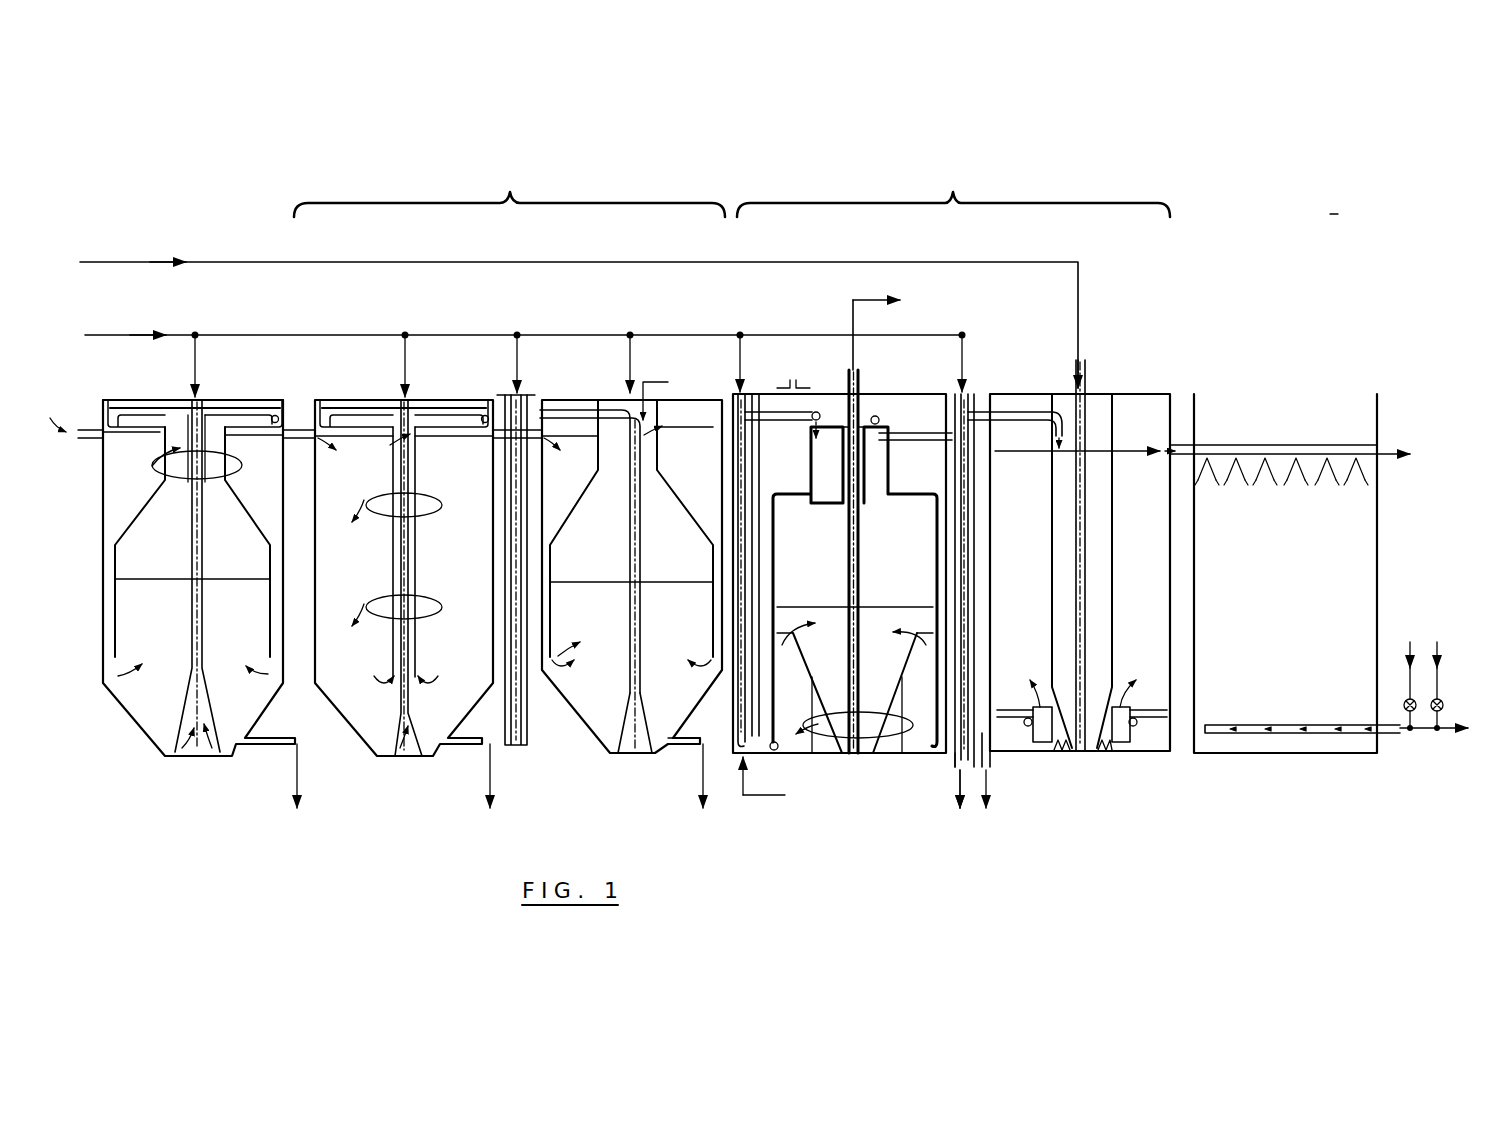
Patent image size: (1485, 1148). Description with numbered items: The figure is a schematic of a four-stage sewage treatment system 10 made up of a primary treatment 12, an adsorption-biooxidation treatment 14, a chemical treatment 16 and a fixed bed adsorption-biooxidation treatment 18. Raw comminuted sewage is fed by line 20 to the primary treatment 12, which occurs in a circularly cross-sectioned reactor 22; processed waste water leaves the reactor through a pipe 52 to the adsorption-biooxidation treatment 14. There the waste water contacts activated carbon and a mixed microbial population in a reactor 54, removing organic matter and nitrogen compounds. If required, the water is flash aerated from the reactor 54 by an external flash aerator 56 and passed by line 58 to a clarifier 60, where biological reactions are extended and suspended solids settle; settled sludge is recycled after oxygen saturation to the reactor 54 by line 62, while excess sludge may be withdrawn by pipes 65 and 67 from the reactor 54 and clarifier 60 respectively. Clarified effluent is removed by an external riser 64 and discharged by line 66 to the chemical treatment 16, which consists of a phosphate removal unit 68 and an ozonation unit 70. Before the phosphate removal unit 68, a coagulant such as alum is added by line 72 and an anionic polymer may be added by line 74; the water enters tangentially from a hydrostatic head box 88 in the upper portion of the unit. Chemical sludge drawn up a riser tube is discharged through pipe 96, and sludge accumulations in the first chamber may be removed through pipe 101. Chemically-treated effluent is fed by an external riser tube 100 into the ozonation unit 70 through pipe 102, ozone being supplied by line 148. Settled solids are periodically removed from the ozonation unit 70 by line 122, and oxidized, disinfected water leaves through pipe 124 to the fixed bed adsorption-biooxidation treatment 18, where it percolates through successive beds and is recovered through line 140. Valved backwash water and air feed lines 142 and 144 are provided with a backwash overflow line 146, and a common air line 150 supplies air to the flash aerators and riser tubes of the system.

The four-stage sewage treatment system 10 is at (1338, 214).
The primary treatment 12 is at (98, 388).
The adsorption-biooxidation treatment 14 is at (509, 191).
The chemical treatment 16 is at (953, 188).
The fixed bed adsorption-biooxidation treatment 18 is at (1326, 386).
The line 20 is at (83, 436).
The reactor 22 is at (124, 718).
The pipe 52 is at (300, 420).
The reactor 54 is at (356, 736).
The external flash aerator 56 is at (524, 745).
The line 58 is at (540, 444).
The clarifier 60 is at (598, 744).
The line 62 is at (530, 396).
The external riser 64 is at (740, 775).
The pipe 65 is at (458, 744).
The line 66 is at (757, 400).
The pipe 67 is at (680, 740).
The phosphate removal unit 68 is at (874, 757).
The ozonation unit 70 is at (1100, 762).
The line 72 is at (660, 380).
The line 74 is at (780, 795).
The hydrostatic head box 88 is at (872, 494).
The pipe 96 is at (848, 310).
The external riser tube 100 is at (968, 770).
The pipe 101 is at (950, 800).
The pipe 102 is at (1012, 412).
The line 122 is at (990, 795).
The pipe 124 is at (1188, 444).
The line 140 is at (1432, 738).
The valved backwash water feed line 142 is at (1408, 640).
The valved backwash air feed line 144 is at (1436, 648).
The backwash overflow line 146 is at (1372, 450).
The line 148 is at (108, 262).
The common air line 150 is at (108, 335).